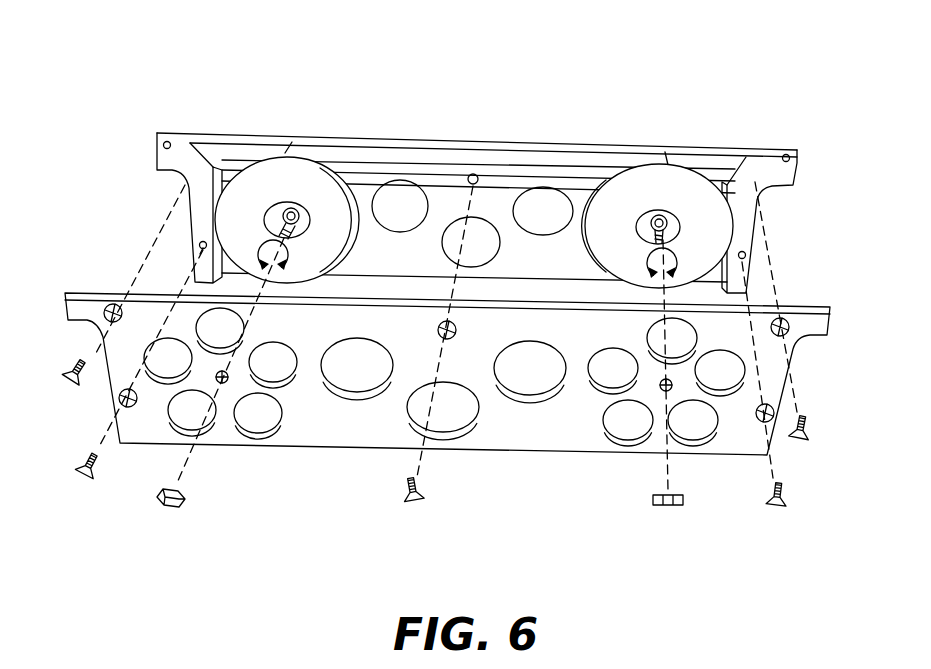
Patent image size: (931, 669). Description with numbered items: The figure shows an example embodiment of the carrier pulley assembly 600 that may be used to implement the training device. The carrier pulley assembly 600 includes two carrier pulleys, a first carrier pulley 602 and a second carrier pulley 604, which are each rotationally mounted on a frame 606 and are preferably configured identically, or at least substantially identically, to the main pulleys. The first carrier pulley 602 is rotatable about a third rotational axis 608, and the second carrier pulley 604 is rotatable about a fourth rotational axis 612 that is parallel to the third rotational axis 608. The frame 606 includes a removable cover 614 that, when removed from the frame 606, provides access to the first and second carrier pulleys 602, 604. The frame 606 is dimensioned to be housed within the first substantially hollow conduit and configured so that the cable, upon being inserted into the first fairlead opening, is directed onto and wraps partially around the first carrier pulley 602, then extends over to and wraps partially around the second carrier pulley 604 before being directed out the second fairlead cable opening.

The carrier pulley assembly 600 is at (498, 100).
The first carrier pulley 602 is at (317, 155).
The second carrier pulley 604 is at (647, 163).
The frame 606 is at (440, 137).
The third rotational axis 608 is at (263, 275).
The fourth rotational axis 612 is at (663, 297).
The removable cover 614 is at (572, 440).